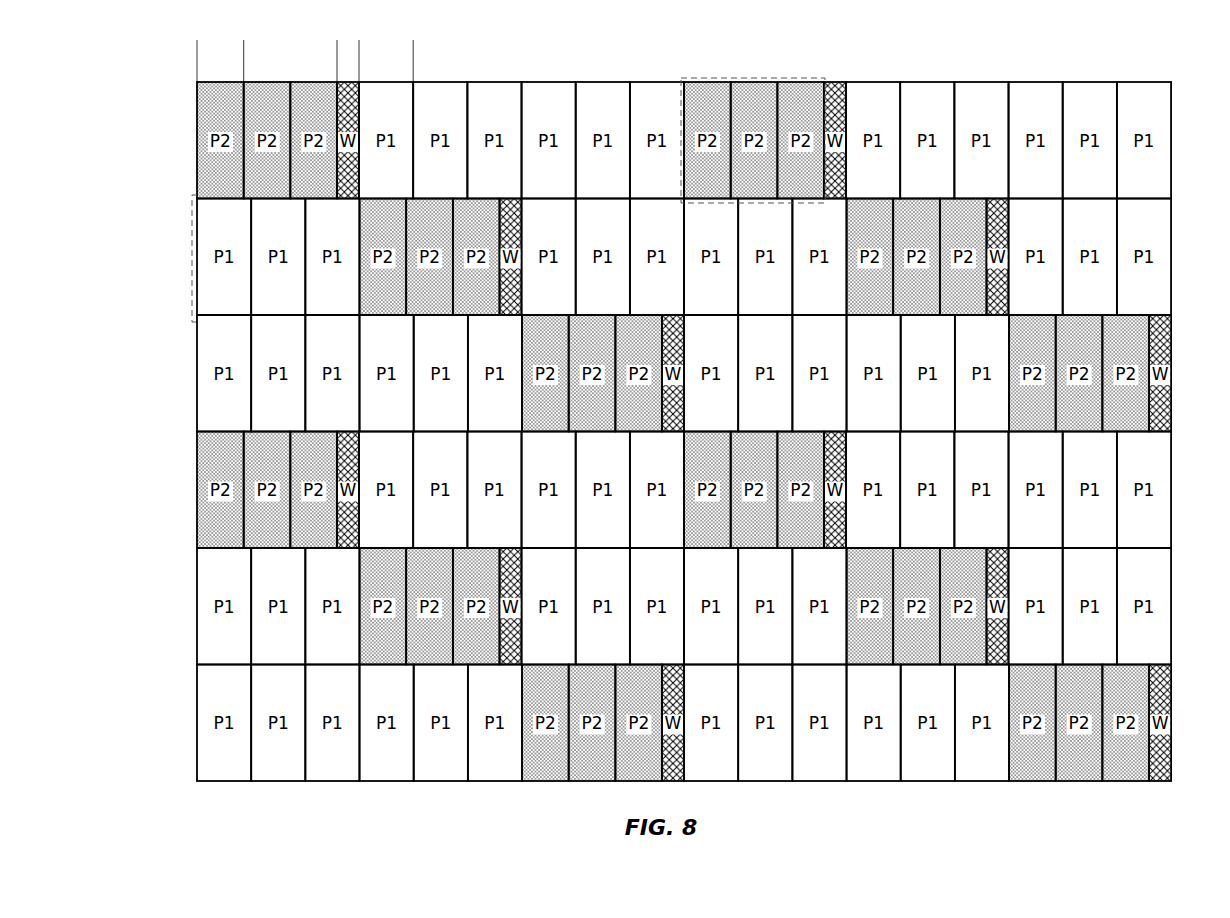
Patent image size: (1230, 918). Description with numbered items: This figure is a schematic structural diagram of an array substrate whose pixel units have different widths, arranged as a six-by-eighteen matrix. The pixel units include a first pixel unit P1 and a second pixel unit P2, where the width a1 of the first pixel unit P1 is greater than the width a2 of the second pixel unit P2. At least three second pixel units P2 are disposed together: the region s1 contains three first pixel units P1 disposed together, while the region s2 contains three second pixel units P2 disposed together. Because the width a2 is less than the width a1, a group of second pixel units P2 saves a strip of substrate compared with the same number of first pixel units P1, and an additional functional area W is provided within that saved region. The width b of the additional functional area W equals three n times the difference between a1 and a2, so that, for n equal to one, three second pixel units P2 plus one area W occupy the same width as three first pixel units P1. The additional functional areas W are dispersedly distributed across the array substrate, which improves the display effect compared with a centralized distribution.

The first pixel unit P1 is at (684, 431).
The second pixel unit P2 is at (673, 431).
The additional functional area W is at (754, 431).
The width of the first pixel unit a1 is at (359, 71).
The width of the second pixel unit a2 is at (197, 71).
The width of the additional functional area b is at (359, 71).
The region S1 s1 is at (192, 225).
The region S2 s2 is at (778, 78).